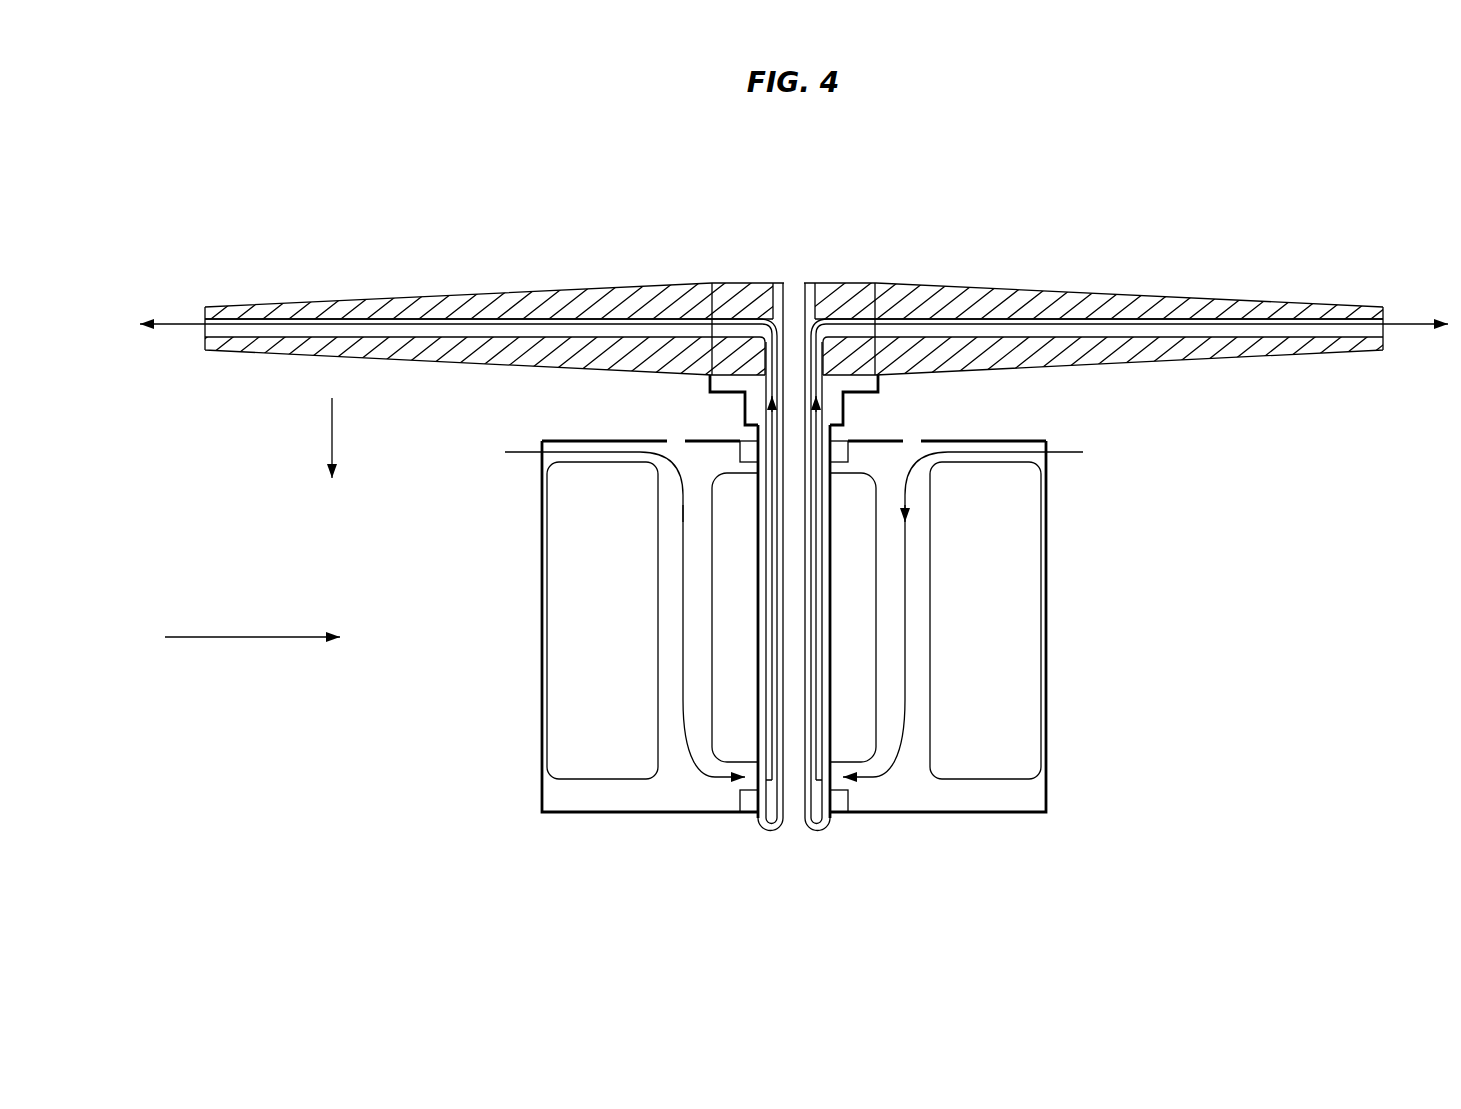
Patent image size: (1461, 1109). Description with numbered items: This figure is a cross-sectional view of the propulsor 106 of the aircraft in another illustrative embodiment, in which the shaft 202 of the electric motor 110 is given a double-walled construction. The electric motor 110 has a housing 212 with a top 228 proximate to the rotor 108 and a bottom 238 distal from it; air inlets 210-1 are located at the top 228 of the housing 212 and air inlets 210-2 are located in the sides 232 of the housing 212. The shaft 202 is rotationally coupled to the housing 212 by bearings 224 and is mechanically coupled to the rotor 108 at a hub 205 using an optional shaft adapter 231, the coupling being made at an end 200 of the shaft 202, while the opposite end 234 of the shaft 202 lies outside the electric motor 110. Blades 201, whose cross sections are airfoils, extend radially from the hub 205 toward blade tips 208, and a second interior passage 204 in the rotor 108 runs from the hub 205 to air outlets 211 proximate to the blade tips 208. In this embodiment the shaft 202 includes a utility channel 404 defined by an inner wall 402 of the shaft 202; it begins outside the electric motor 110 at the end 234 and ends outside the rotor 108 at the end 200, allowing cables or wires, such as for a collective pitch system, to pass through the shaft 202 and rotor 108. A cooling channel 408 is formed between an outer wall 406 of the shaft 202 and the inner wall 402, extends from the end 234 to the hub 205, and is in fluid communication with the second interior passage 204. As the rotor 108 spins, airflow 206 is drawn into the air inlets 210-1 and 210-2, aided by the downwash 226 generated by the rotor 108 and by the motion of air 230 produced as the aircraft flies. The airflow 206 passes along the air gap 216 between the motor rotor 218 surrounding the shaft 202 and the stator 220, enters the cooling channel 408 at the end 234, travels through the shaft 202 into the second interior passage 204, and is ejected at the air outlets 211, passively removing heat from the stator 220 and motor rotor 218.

The propulsor 106 is at (940, 172).
The rotor 108 is at (856, 252).
The electric motor 110 is at (1195, 648).
The end of shaft 200 is at (785, 278).
The blades 201 is at (470, 292).
The shaft 202 is at (754, 825).
The second interior passage 204 is at (967, 324).
The hub 205 is at (877, 285).
The airflow 206 is at (150, 316).
The blade tips 208 is at (226, 303).
The air inlets 210-1 is at (683, 436).
The air inlets 210-2 is at (520, 462).
The air outlets 211 is at (192, 338).
The housing 212 is at (540, 790).
The air gap 216 is at (667, 565).
The motor rotor 218 is at (717, 641).
The stator 220 is at (575, 671).
The bearings 224 is at (845, 452).
The downwash 226 is at (340, 418).
The top 228 is at (562, 437).
The motion of air 230 is at (252, 666).
The shaft adapter 231 is at (722, 385).
The sides 232 is at (535, 683).
The end of shaft 234 is at (803, 880).
The bottom 238 is at (998, 820).
The inner wall 402 is at (800, 820).
The utility channel 404 is at (787, 838).
The outer wall 406 is at (826, 742).
The cooling channel 408 is at (862, 785).